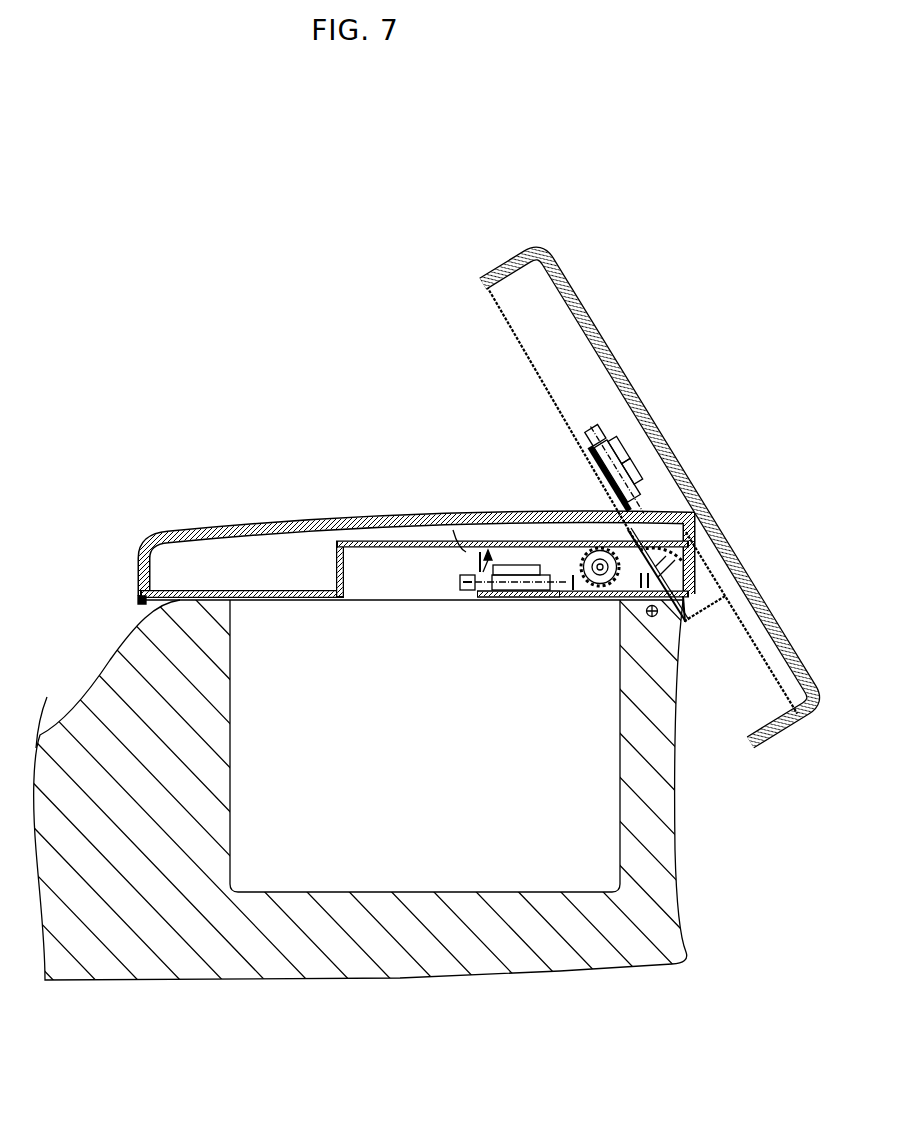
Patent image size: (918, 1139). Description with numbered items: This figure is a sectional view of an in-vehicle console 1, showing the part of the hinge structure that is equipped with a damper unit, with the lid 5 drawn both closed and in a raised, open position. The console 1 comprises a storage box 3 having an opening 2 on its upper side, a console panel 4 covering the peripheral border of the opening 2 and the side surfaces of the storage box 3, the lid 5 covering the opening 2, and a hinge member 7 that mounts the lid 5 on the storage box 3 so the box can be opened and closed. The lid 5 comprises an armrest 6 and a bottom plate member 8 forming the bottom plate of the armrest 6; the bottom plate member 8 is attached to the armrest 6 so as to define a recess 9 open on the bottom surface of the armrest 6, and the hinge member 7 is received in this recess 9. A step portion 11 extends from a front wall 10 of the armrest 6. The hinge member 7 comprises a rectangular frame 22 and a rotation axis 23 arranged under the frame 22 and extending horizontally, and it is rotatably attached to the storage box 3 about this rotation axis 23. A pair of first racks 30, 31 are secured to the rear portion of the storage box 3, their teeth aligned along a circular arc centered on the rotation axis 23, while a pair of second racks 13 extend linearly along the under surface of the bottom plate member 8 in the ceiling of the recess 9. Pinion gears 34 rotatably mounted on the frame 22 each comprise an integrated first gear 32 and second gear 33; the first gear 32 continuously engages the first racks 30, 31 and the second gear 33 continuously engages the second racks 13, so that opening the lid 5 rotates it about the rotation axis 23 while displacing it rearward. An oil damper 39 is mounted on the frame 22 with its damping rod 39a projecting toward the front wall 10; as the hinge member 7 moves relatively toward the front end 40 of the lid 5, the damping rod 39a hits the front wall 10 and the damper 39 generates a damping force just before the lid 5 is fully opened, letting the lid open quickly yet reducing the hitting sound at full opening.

The console 1 is at (395, 258).
The opening 2 is at (228, 597).
The storage box 3 is at (331, 686).
The console panel 4 is at (147, 910).
The lid 5 is at (168, 508).
The armrest 6 is at (312, 537).
The hinge member 7 is at (712, 618).
The bottom plate member 8 is at (371, 545).
The recess 9 is at (380, 586).
The front wall 10 is at (338, 561).
The step portion 11 is at (524, 552).
The second racks 13 is at (738, 632).
The frame 22 is at (500, 598).
The rotation axis 23 is at (655, 618).
The first rack 30 is at (643, 514).
The first rack 31 is at (643, 514).
The first gear 32 is at (600, 543).
The second gear 33 is at (568, 598).
The pinion gear 34 is at (571, 552).
The oil damper 39 is at (510, 566).
The damping rod 39a is at (465, 552).
The front end 40 is at (135, 558).